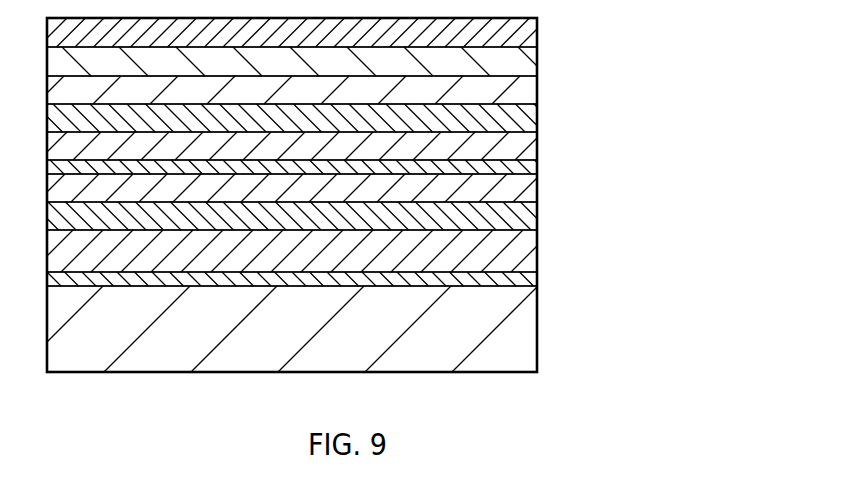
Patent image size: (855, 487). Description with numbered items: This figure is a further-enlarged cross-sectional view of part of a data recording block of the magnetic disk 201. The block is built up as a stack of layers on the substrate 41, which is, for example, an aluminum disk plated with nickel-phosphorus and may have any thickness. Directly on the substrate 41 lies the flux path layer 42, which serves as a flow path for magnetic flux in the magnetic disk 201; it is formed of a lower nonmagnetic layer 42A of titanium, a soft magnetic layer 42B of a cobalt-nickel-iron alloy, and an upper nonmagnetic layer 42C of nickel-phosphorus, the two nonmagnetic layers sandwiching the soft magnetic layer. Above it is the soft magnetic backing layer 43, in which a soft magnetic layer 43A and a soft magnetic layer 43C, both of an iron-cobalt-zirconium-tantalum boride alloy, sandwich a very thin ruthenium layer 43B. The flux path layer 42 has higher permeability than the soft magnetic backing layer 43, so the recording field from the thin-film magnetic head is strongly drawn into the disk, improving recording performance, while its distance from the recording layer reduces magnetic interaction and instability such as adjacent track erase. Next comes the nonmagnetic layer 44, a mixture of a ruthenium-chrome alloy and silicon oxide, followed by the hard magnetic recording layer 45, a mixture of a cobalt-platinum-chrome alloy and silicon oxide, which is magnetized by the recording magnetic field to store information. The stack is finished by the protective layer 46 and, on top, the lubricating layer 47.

The magnetic disk 201 is at (387, 195).
The lubricating layer 47 is at (524, 31).
The protective layer 46 is at (524, 58).
The hard magnetic recording layer 45 is at (524, 86).
The nonmagnetic layer 44 is at (524, 114).
The soft magnetic backing layer 43 is at (358, 174).
The soft magnetic layer 43C is at (524, 140).
The nonmagnetic layer 43B is at (524, 166).
The soft magnetic layer 43A is at (524, 186).
The flux path layer 42 is at (358, 253).
The nonmagnetic layer 42C is at (524, 220).
The soft magnetic layer 42B is at (524, 252).
The nonmagnetic layer 42A is at (524, 283).
The substrate 41 is at (524, 323).